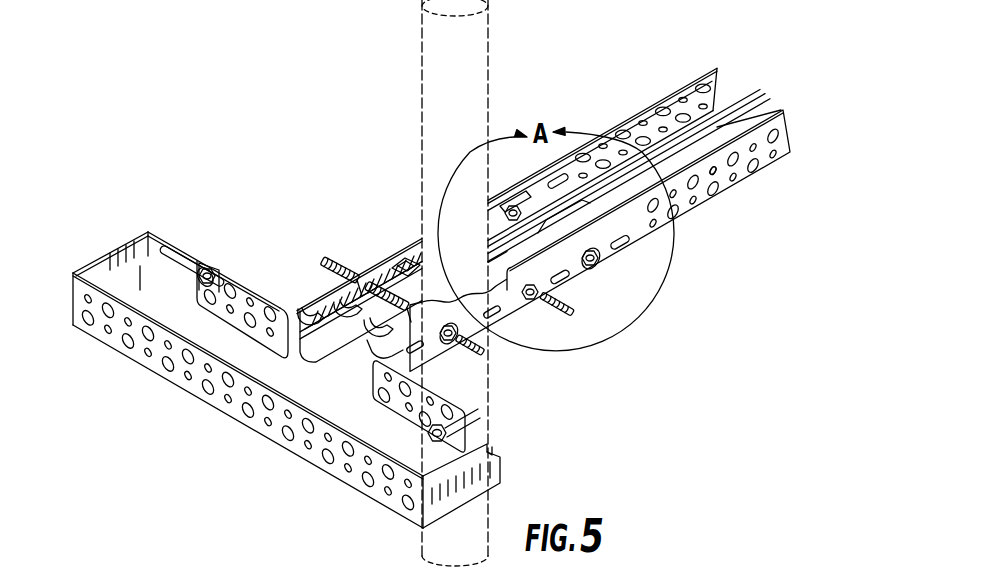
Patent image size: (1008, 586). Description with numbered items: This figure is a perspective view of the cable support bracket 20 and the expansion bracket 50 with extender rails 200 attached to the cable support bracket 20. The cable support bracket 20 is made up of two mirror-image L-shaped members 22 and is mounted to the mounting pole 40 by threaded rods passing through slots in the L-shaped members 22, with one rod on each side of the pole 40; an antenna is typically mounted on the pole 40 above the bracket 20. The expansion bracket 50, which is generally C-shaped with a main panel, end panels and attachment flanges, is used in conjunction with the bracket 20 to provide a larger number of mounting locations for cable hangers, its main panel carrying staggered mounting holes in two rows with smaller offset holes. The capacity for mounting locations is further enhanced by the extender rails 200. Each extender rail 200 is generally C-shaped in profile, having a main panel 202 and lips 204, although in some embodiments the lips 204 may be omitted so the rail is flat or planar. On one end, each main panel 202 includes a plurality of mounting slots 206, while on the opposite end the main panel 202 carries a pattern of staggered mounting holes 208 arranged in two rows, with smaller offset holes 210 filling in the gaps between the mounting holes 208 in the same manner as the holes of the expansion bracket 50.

The cable support bracket 20 is at (366, 208).
The L-shaped member 22 is at (512, 374).
The mounting pole 40 is at (472, 72).
The expansion bracket 50 is at (226, 468).
The extender rail 200 is at (642, 207).
The main panel 202 is at (793, 140).
The lip 204 is at (781, 108).
The mounting slot 206 is at (617, 249).
The mounting hole 208 is at (696, 212).
The smaller offset hole 210 is at (724, 164).